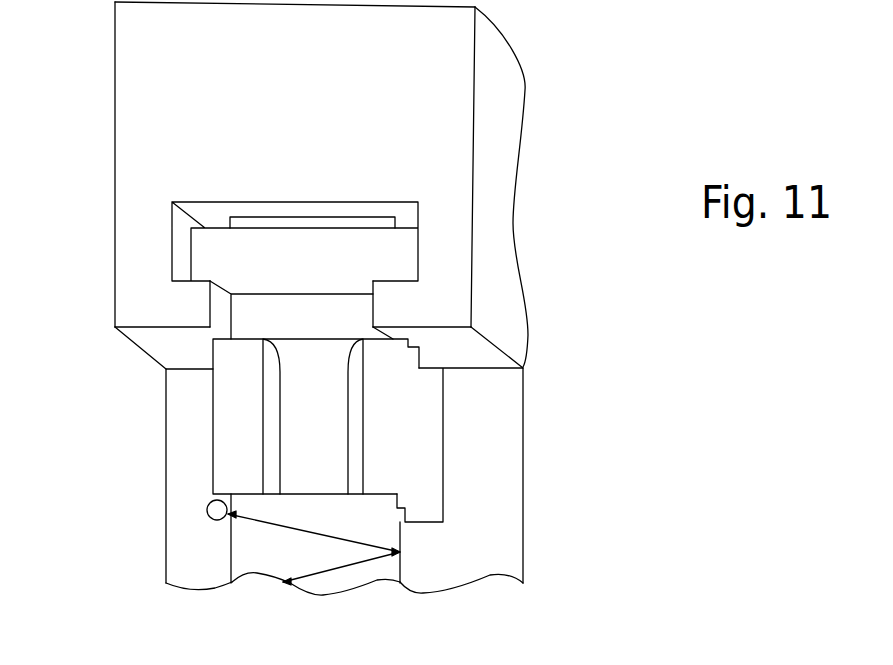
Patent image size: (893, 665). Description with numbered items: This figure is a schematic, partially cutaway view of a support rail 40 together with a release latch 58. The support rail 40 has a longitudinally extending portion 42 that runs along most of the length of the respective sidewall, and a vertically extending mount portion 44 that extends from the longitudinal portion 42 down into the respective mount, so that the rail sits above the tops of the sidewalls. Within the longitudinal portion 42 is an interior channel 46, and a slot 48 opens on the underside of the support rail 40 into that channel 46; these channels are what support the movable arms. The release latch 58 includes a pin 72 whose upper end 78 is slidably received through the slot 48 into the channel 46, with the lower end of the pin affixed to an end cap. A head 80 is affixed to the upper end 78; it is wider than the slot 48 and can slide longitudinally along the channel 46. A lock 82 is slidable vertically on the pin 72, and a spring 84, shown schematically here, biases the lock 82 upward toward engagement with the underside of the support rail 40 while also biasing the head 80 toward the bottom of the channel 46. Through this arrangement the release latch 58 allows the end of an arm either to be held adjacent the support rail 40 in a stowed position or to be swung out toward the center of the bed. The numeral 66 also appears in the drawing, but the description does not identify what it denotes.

The support rail 40 is at (523, 107).
The longitudinally extending portion 42 is at (115, 51).
The vertically extending mount portion 44 is at (167, 430).
The interior channel 46 is at (213, 202).
The slot 48 is at (213, 338).
The release latch 58 is at (610, 440).
The component 66 is at (529, 655).
The pin 72 is at (231, 557).
The upper end 78 is at (231, 315).
The head 80 is at (397, 224).
The lock 82 is at (443, 433).
The spring 84 is at (312, 577).